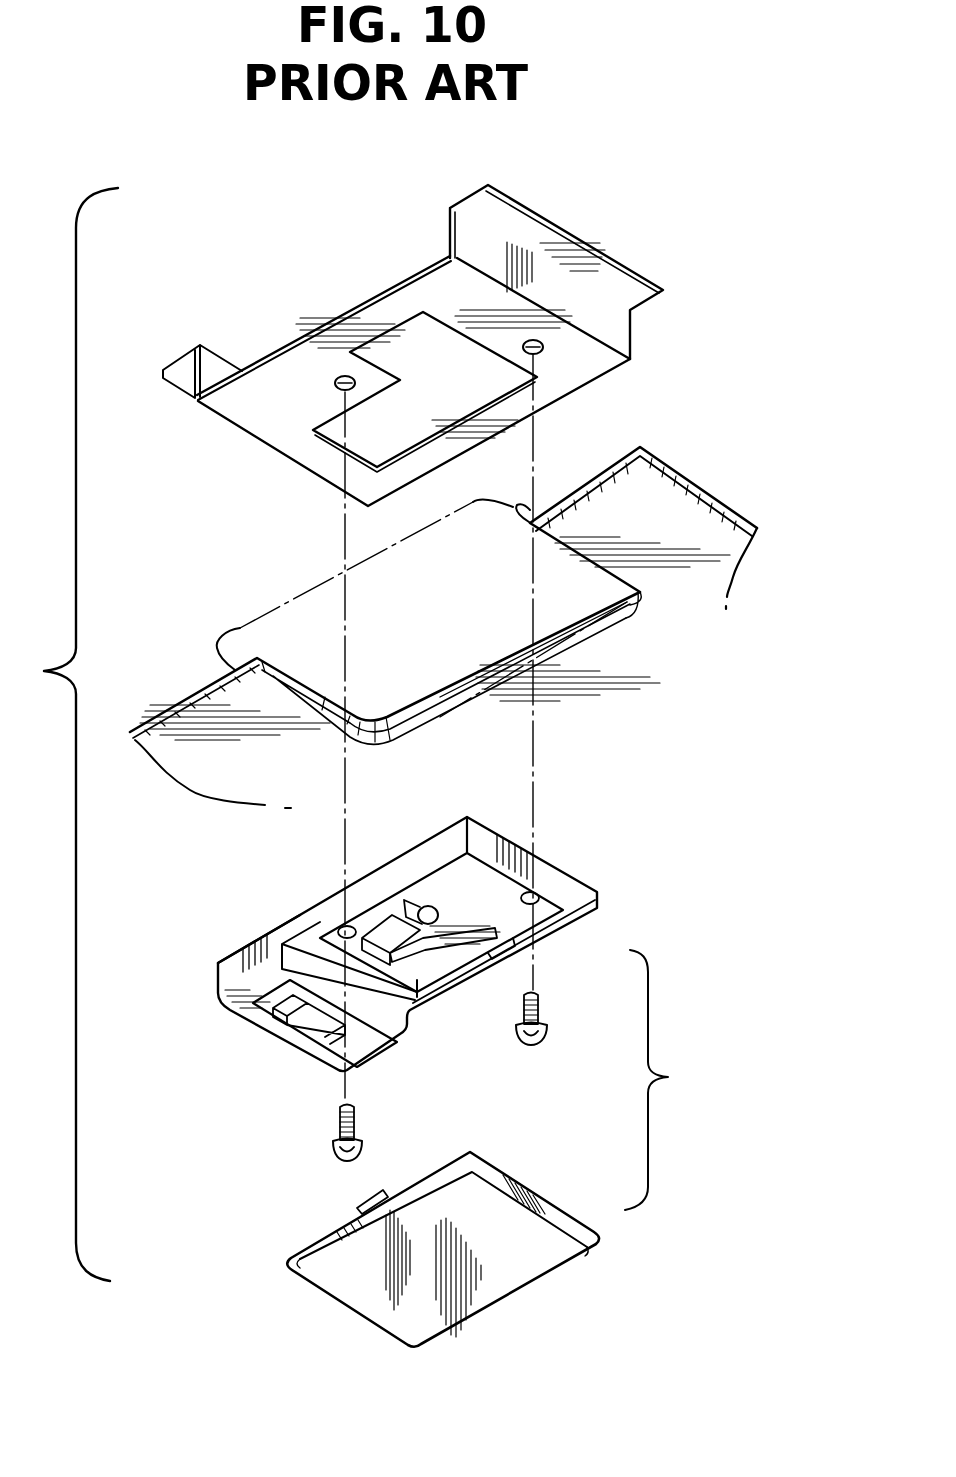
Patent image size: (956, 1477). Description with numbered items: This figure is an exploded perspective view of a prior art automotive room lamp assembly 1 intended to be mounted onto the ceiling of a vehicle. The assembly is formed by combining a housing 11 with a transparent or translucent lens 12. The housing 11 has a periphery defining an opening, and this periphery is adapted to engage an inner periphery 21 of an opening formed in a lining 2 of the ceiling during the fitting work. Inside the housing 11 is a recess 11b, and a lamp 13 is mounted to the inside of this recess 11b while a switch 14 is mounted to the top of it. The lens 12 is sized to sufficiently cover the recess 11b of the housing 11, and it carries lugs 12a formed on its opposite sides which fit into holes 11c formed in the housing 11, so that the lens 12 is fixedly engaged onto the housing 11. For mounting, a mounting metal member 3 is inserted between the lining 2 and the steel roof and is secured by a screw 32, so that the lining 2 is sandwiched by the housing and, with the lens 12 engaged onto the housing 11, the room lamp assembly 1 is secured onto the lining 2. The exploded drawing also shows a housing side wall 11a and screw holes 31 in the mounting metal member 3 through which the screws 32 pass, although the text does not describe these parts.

The automotive room lamp assembly 1 is at (446, 1063).
The lining 2 is at (688, 481).
The mounting metal member 3 is at (597, 250).
The housing 11 is at (567, 927).
The side wall of housing 11a is at (262, 938).
The recess 11b is at (427, 967).
The holes 11c is at (500, 955).
The lens 12 is at (563, 1203).
The lugs 12a is at (357, 1203).
The lamp 13 is at (424, 912).
The switch 14 is at (282, 1020).
The inner periphery 21 is at (443, 688).
The screw holes 31 is at (340, 378).
The screw 32 is at (332, 1152).